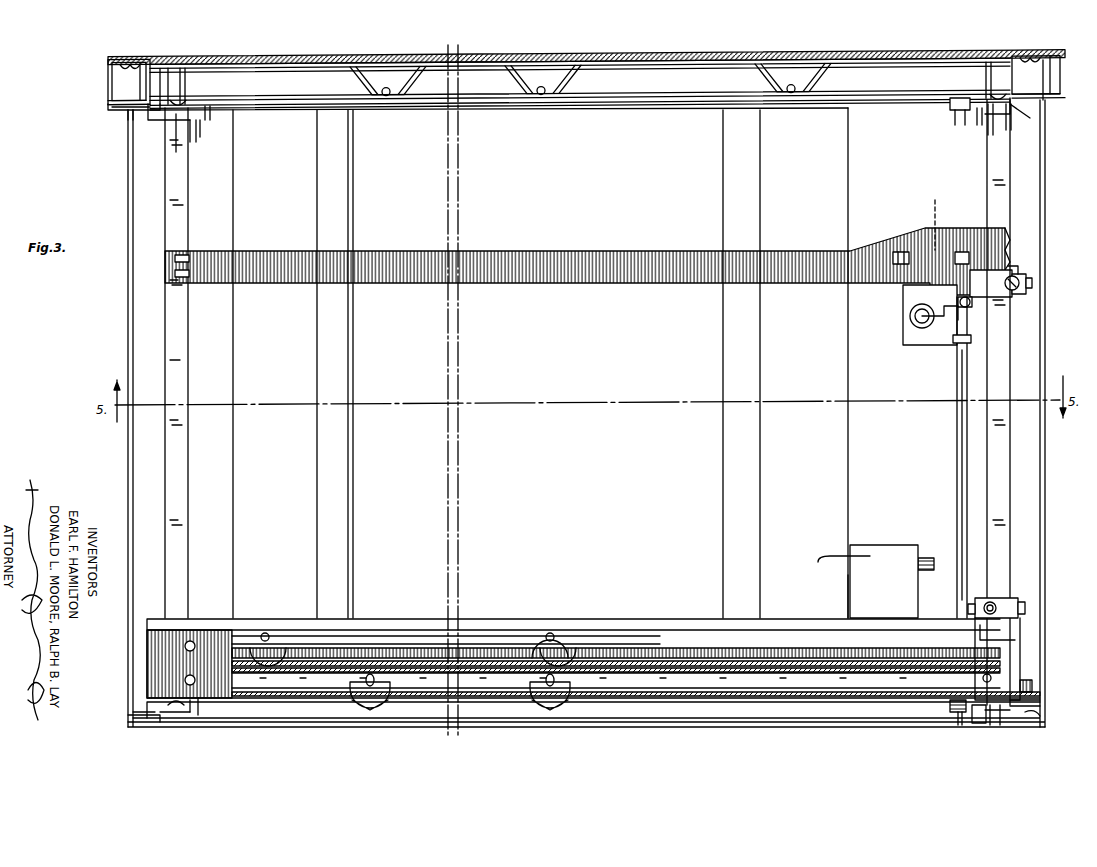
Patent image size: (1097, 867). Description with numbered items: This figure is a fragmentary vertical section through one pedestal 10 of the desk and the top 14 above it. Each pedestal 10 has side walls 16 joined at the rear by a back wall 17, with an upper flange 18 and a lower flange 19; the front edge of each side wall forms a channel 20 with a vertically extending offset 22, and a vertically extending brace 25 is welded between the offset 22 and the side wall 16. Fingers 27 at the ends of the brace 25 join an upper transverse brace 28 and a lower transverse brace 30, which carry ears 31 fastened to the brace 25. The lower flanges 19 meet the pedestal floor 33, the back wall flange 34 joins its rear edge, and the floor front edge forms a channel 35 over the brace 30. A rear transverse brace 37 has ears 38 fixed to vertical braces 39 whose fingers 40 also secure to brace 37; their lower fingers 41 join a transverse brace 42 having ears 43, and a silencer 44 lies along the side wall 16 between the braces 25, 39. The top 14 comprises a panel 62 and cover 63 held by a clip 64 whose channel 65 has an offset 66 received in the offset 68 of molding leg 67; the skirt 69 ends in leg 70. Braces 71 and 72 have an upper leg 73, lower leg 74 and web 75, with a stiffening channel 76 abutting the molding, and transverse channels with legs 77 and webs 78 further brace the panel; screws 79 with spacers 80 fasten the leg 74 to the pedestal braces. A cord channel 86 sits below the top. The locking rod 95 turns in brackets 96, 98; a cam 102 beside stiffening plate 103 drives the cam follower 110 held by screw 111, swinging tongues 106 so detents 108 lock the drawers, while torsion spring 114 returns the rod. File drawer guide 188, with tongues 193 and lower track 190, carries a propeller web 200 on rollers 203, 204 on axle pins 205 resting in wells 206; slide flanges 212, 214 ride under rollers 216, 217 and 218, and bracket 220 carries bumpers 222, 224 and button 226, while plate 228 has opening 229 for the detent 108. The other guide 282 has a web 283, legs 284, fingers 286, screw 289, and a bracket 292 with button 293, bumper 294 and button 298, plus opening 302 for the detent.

The pedestal 10 is at (118, 301).
The top 14 is at (530, 49).
The side wall 16 is at (902, 498).
The back wall 17 is at (128, 334).
The upper flange 18 is at (628, 104).
The lower flange 19 is at (408, 721).
The channel 20 is at (1040, 494).
The offset 22 is at (998, 186).
The vertically extending brace 25 is at (976, 366).
The finger 27 is at (981, 130).
The transversely extending brace 28 is at (1026, 108).
The transversely extending brace 30 is at (978, 724).
The ear 31 is at (982, 116).
The pedestal floor 33 is at (704, 721).
The flange 34 is at (140, 724).
The channel 35 is at (1036, 722).
The transversely extending brace 37 is at (196, 104).
The ear 38 is at (192, 120).
The vertically extending brace 39 is at (183, 206).
The finger 40 is at (176, 135).
The finger 41 is at (180, 718).
The transversely extending brace 42 is at (198, 714).
The ear 43 is at (206, 704).
The silencer 44 is at (540, 390).
The sheet-metal panel 62 is at (684, 64).
The decorative cover 63 is at (385, 57).
The clip 64 is at (104, 66).
The channel 65 is at (106, 54).
The offset 66 is at (132, 64).
The leg 67 is at (146, 54).
The offset 68 is at (108, 82).
The skirt 69 is at (108, 96).
The leg 70 is at (114, 106).
The brace 71 is at (214, 104).
The brace 72 is at (695, 86).
The upper leg 73 is at (216, 54).
The lower leg 74 is at (174, 92).
The web 75 is at (210, 78).
The stiffening channel 76 is at (112, 104).
The leg 77 is at (406, 78).
The web 78 is at (388, 93).
The screw 79 is at (184, 64).
The spacer 80 is at (174, 102).
The cord channel 86 is at (138, 118).
The rod 95 is at (956, 444).
The bracket 96 is at (950, 108).
The bracket 98 is at (962, 720).
The cam 102 is at (910, 318).
The stiffening plate 103 is at (905, 300).
The locking tongue 106 is at (939, 558).
The detent 108 is at (910, 252).
The cam follower 110 is at (925, 324).
The screw 111 is at (972, 302).
The torsion spring 114 is at (952, 708).
The guide 188 is at (236, 628).
The offset tongue 193 is at (198, 644).
The lower track 190 is at (1022, 680).
The web 200 is at (704, 630).
The roller 203 is at (372, 674).
The roller 204 is at (584, 652).
The axle pin 205 is at (370, 652).
The well 206 is at (370, 710).
The flange 212 is at (650, 647).
The flange 214 is at (472, 661).
The roller 216 is at (548, 636).
The roller 217 is at (266, 628).
The roller 218 is at (318, 640).
The bracket 220 is at (1024, 600).
The resilient bumper 222 is at (1024, 620).
The bumper 224 is at (968, 602).
The anti-friction button 226 is at (994, 600).
The plate 228 is at (886, 582).
The opening 229 is at (870, 556).
The guide 282 is at (436, 290).
The web 283 is at (273, 282).
The leg 284 is at (405, 248).
The finger 286 is at (186, 277).
The screw 289 is at (1014, 268).
The bracket 292 is at (1008, 240).
The anti-friction button 293 is at (1034, 284).
The bumper 294 is at (1028, 276).
The anti-friction button 298 is at (1018, 272).
The opening 302 is at (893, 252).